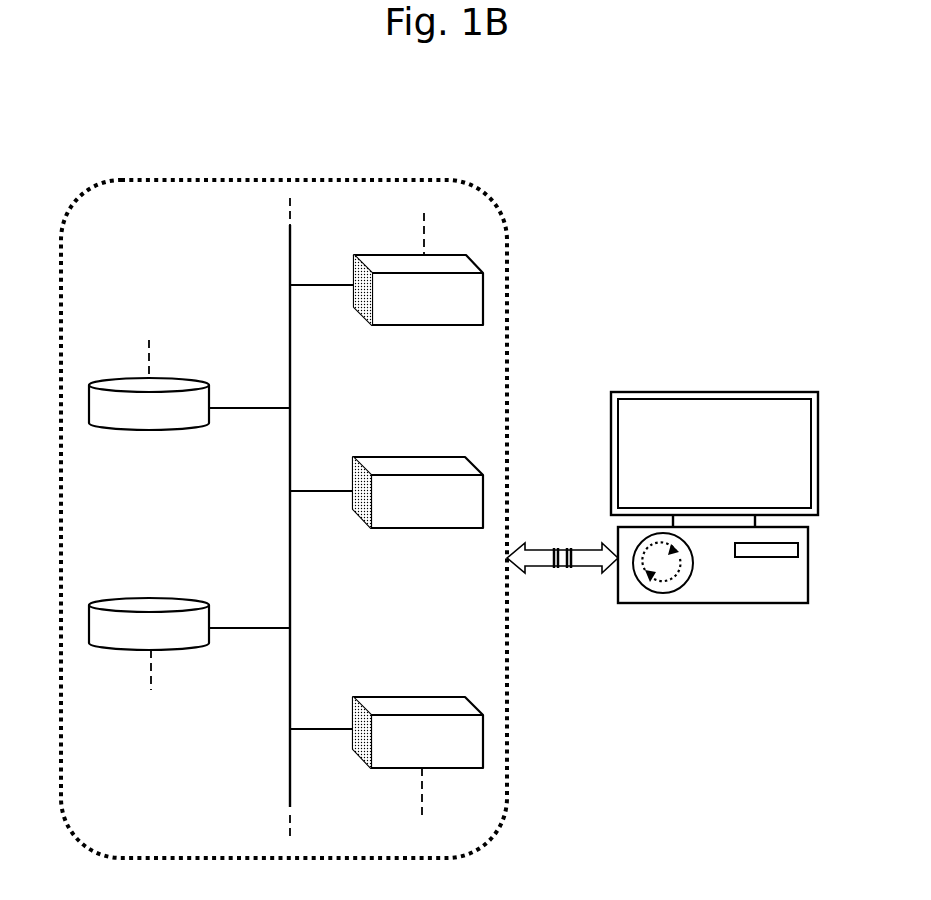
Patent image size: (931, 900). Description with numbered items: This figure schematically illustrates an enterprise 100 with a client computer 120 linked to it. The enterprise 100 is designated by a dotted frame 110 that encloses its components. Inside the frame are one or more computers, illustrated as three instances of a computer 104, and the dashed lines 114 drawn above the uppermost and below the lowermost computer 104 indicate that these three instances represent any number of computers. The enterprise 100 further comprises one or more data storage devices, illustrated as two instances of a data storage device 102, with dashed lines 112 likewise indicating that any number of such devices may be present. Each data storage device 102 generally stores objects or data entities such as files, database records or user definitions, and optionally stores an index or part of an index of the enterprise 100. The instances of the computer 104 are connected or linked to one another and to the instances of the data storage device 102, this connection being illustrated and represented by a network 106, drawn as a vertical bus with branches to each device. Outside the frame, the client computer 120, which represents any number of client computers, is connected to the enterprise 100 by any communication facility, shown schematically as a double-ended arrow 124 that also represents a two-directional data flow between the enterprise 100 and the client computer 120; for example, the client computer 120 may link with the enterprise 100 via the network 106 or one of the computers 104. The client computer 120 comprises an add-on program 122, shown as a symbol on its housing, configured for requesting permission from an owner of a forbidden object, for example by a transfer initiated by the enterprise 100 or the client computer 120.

The enterprise 100 is at (303, 162).
The dotted frame 110 is at (487, 200).
The network 106 is at (233, 405).
The data storage device 102 is at (178, 430).
The dashed lines 112 is at (153, 361).
The computer 104 is at (447, 328).
The dashed lines 114 is at (420, 238).
The double-ended arrow 124 is at (540, 564).
The client computer 120 is at (714, 520).
The program 122 is at (657, 593).